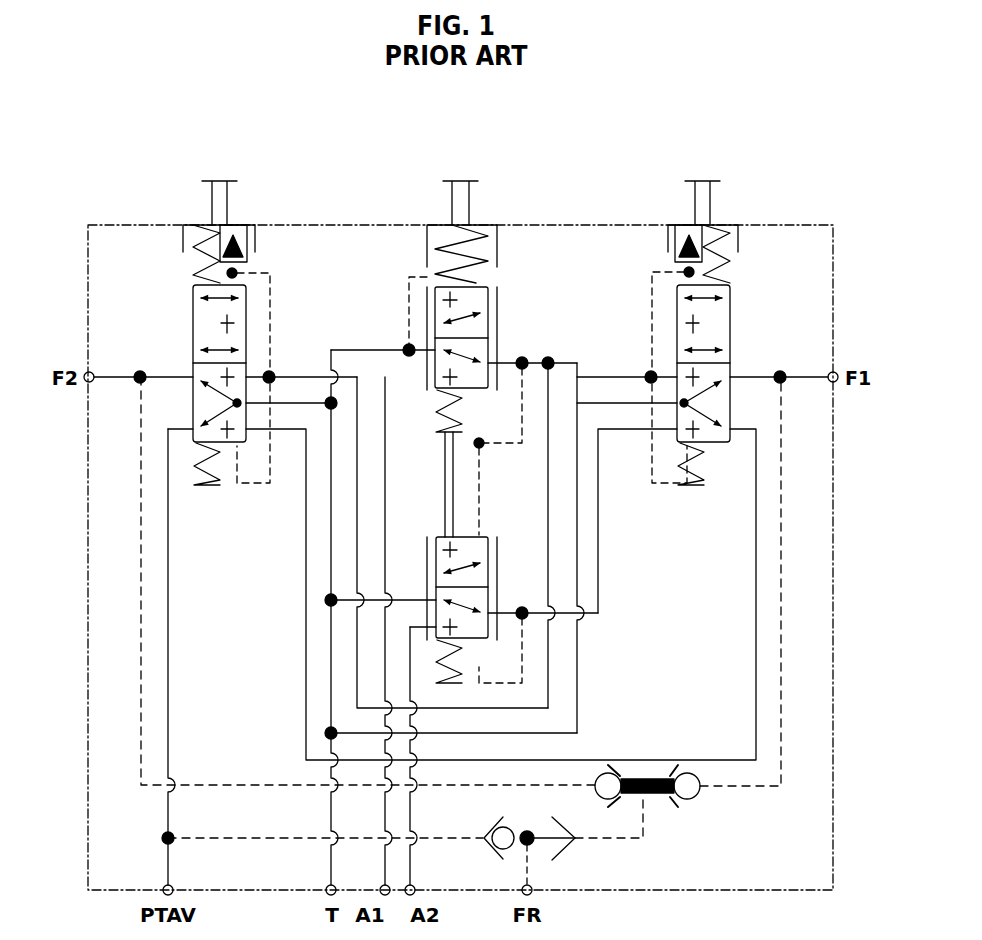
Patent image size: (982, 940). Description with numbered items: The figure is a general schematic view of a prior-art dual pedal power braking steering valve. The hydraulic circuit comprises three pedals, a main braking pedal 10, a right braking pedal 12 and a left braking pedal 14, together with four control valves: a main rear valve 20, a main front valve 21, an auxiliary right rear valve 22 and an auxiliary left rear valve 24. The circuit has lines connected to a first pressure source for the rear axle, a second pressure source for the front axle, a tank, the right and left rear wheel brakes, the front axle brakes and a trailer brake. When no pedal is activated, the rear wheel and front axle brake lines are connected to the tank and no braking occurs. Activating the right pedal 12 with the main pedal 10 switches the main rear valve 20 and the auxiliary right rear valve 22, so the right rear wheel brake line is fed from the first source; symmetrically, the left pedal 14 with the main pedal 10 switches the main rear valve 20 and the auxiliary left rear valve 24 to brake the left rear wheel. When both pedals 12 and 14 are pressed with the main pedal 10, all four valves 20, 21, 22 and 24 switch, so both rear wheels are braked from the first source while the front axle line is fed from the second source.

The main braking pedal 10 is at (468, 176).
The right braking pedal 12 is at (707, 176).
The left braking pedal 14 is at (225, 176).
The main rear valve 20 is at (516, 324).
The main front valve 21 is at (512, 566).
The auxiliary right rear valve 22 is at (746, 324).
The auxiliary left rear valve 24 is at (174, 324).